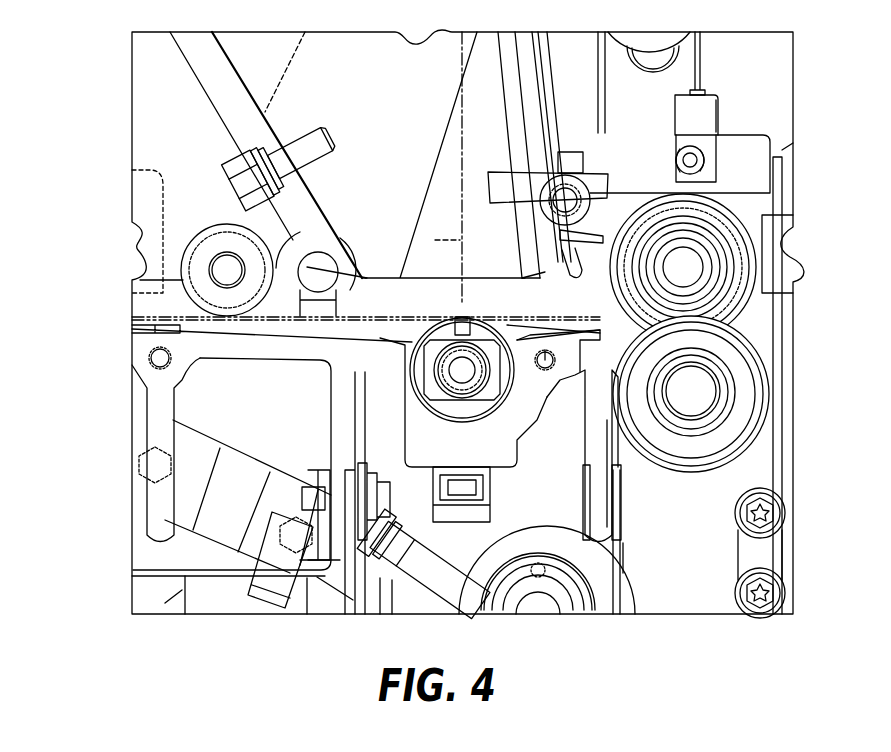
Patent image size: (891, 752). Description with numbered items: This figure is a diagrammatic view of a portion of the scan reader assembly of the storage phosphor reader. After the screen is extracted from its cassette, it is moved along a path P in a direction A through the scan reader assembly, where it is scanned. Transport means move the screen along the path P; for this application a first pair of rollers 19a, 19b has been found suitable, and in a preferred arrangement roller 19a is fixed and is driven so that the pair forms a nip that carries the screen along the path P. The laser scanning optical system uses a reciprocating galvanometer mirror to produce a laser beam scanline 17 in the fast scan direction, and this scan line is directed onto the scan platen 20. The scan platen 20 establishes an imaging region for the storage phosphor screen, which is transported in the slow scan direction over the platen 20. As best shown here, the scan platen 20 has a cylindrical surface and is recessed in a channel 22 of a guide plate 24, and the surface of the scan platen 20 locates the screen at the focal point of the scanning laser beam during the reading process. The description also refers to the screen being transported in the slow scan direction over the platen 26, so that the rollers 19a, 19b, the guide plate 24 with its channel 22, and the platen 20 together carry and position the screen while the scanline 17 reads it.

The laser beam scanline 17 is at (460, 238).
The platen 26 is at (183, 280).
The scan platen 20 is at (417, 398).
The channel 22 is at (413, 345).
The guide plate 24 is at (529, 418).
The roller 19a is at (740, 398).
The roller 19b is at (745, 298).
The path P is at (134, 315).
The direction A is at (382, 303).